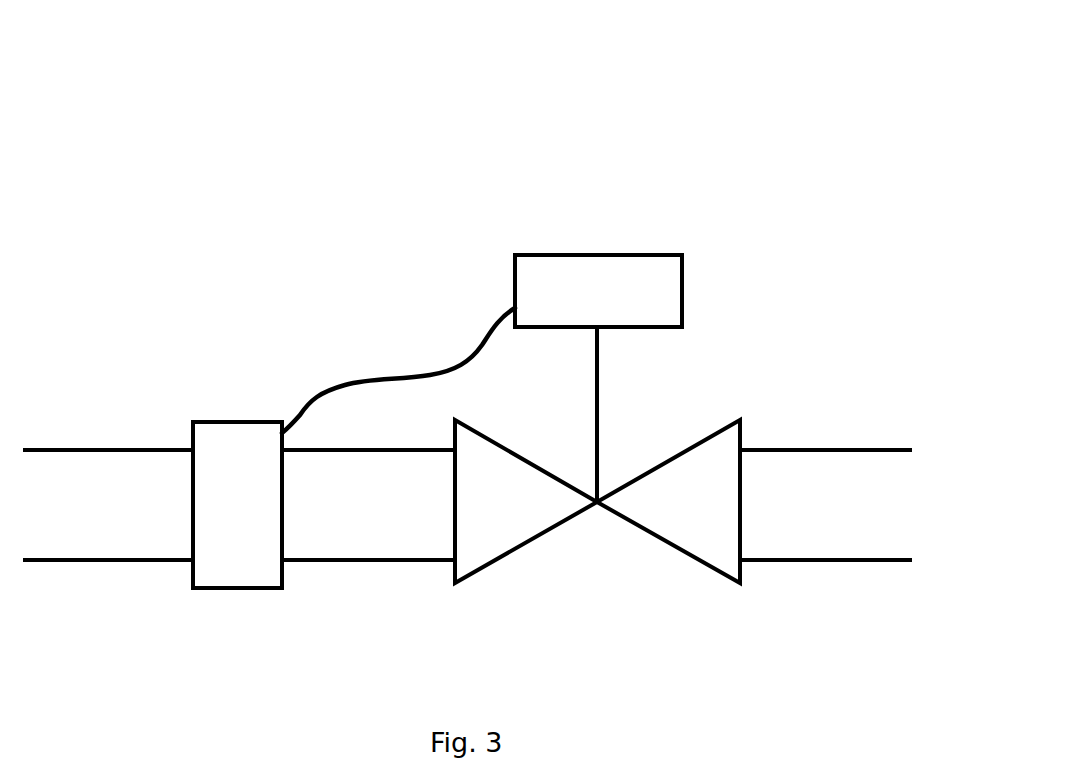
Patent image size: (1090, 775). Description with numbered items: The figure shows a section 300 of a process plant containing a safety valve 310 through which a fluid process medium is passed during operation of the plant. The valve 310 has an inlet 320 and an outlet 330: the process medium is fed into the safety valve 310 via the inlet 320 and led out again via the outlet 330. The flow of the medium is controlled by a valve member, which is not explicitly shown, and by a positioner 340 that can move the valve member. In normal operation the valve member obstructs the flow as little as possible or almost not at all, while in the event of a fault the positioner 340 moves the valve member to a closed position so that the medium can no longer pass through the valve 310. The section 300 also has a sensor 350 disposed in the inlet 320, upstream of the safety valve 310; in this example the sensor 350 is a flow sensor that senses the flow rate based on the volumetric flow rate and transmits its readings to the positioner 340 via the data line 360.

The section of a process plant 300 is at (467, 302).
The safety valve 310 is at (647, 455).
The inlet 320 is at (401, 603).
The outlet 330 is at (751, 610).
The positioner 340 is at (673, 252).
The sensor 350 is at (185, 438).
The data line 360 is at (398, 357).